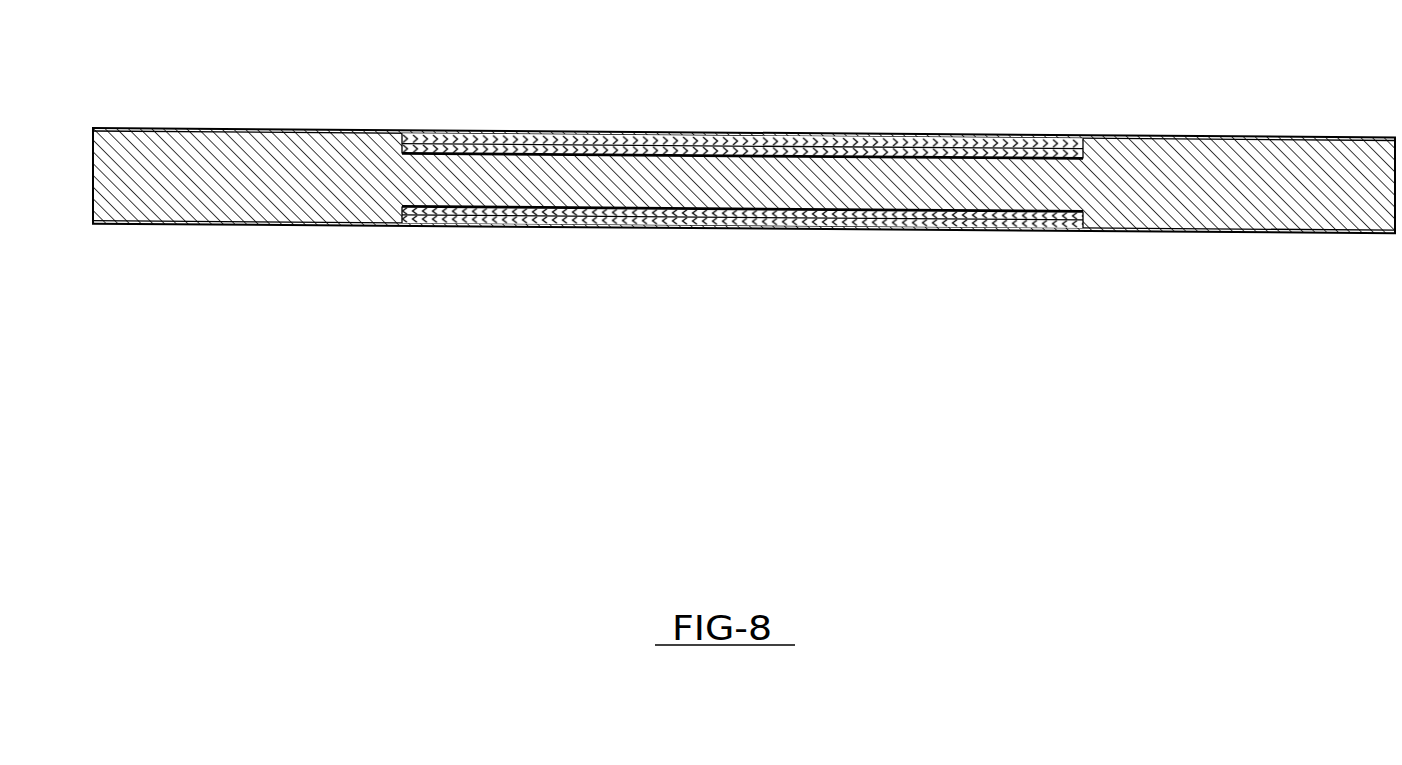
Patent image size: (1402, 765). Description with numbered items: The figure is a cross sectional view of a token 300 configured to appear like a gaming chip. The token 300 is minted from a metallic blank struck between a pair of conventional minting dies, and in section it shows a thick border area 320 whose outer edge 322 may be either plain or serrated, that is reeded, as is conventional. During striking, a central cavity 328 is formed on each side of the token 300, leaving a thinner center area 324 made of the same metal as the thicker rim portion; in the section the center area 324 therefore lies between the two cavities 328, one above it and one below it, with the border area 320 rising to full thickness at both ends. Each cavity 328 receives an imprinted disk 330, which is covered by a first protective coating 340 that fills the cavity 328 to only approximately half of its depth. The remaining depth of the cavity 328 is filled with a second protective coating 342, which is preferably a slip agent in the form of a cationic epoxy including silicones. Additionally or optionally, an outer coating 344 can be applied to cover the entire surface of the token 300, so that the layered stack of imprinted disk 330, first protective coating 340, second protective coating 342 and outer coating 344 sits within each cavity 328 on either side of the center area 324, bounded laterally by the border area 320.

The token 300 is at (291, 315).
The border area 320 is at (150, 128).
The edge 322 is at (92, 174).
The center area 324 is at (790, 187).
The central cavity 328 is at (401, 136).
The imprinted disk 330 is at (473, 152).
The first protective coating 340 is at (932, 153).
The second protective coating 342 is at (823, 147).
The outer coating 344 is at (642, 137).